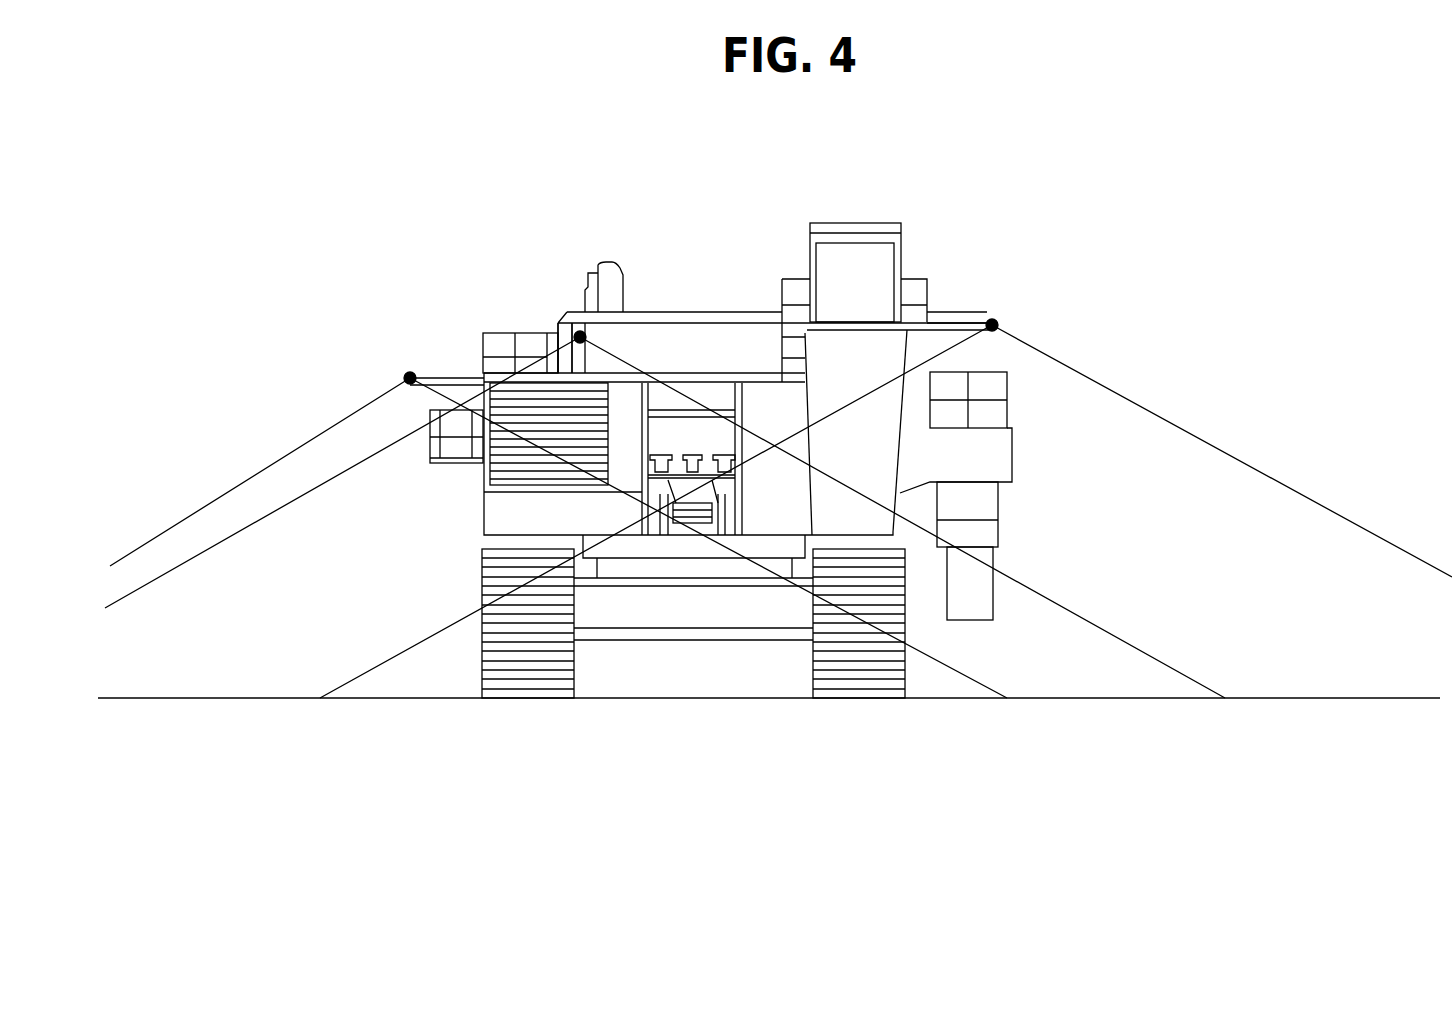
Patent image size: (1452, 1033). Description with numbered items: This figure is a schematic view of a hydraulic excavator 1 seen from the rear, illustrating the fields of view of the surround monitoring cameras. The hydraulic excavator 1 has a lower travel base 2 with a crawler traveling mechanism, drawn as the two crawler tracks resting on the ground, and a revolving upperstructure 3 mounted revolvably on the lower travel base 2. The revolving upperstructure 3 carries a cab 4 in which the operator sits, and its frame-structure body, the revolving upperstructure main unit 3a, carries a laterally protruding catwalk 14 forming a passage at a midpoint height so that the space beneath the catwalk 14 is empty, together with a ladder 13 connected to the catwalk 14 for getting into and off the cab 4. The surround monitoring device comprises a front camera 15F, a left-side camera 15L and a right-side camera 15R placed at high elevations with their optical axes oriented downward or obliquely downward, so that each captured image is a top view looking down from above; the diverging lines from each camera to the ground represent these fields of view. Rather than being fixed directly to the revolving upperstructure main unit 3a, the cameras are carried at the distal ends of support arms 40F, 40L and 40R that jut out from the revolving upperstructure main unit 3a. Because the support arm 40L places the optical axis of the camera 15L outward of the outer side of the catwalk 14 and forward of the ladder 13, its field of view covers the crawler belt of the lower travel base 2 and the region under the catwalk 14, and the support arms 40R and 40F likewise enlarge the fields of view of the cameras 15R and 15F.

The hydraulic excavator 1 is at (750, 202).
The lower travel base 2 is at (903, 657).
The revolving upperstructure 3 is at (948, 520).
The revolving upperstructure main unit 3a is at (883, 427).
The cab 4 is at (843, 258).
The ladder 13 is at (997, 540).
The catwalk 14 is at (925, 290).
The front camera 15F is at (578, 328).
The left-side camera 15L is at (998, 325).
The right-side camera 15R is at (408, 370).
The support arm 40F is at (565, 373).
The support arm 40L is at (965, 322).
The support arm 40R is at (458, 362).